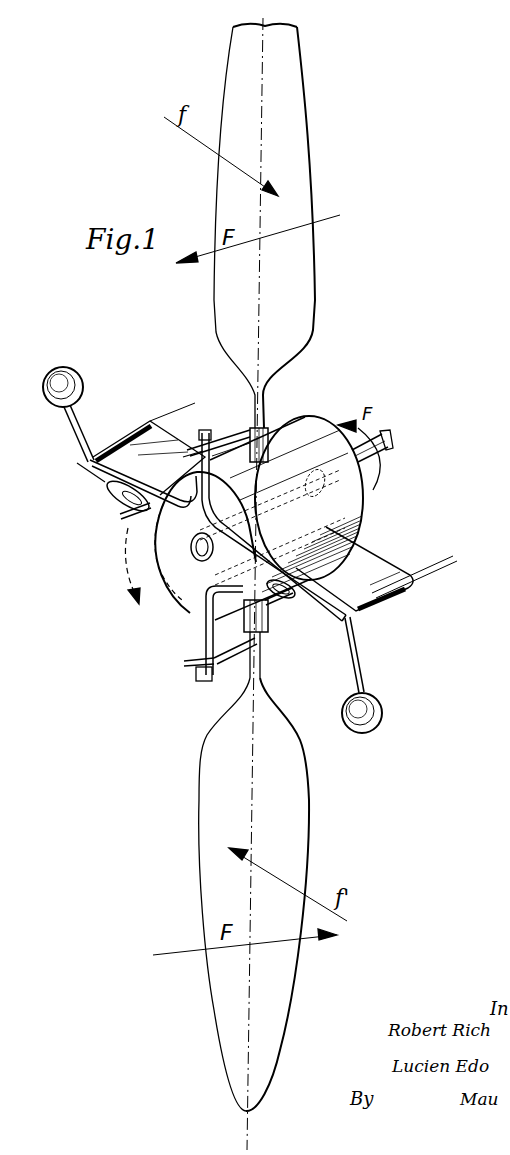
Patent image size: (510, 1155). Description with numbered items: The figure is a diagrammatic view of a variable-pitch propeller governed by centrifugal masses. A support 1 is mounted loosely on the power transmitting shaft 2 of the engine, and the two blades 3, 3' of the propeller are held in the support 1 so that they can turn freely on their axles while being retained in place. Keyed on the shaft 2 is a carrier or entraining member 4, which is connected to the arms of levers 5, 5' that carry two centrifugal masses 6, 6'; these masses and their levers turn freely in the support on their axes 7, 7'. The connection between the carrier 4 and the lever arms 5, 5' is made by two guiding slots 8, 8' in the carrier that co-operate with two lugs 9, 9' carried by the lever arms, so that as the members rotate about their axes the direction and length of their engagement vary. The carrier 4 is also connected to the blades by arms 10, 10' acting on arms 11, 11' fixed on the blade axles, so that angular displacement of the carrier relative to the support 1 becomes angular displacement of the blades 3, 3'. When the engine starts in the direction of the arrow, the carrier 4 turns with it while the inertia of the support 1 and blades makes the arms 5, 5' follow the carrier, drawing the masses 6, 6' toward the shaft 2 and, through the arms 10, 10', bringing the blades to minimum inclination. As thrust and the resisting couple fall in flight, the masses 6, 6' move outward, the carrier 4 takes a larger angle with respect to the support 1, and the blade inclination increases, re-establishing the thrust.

The support 1 is at (330, 503).
The power transmitting shaft 2 is at (388, 446).
The blade 3 is at (306, 226).
The blade 3' is at (278, 871).
The carrier or entraining member 4 is at (187, 547).
The lever arm 5 is at (274, 582).
The lever arm 5' is at (137, 498).
The centrifugal mass 6 is at (382, 675).
The centrifugal mass 6' is at (67, 414).
The axis 7 is at (376, 569).
The axis 7' is at (149, 448).
The guiding slot 8 is at (279, 627).
The guiding slot 8' is at (146, 487).
The lug 9 is at (280, 601).
The lug 9' is at (128, 515).
The arm 10 is at (230, 465).
The arm 10' is at (204, 630).
The arm 11 is at (216, 431).
The arm 11' is at (220, 659).